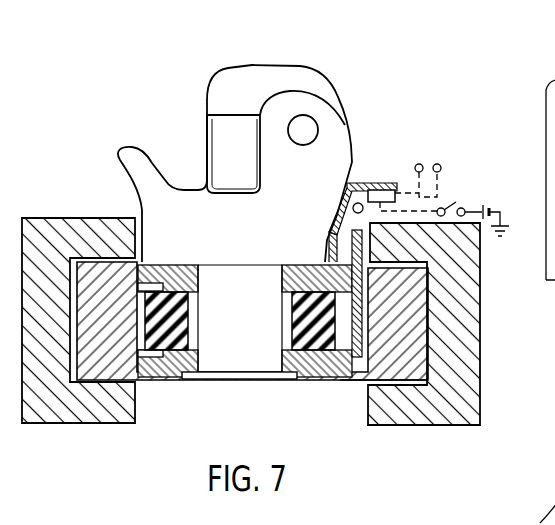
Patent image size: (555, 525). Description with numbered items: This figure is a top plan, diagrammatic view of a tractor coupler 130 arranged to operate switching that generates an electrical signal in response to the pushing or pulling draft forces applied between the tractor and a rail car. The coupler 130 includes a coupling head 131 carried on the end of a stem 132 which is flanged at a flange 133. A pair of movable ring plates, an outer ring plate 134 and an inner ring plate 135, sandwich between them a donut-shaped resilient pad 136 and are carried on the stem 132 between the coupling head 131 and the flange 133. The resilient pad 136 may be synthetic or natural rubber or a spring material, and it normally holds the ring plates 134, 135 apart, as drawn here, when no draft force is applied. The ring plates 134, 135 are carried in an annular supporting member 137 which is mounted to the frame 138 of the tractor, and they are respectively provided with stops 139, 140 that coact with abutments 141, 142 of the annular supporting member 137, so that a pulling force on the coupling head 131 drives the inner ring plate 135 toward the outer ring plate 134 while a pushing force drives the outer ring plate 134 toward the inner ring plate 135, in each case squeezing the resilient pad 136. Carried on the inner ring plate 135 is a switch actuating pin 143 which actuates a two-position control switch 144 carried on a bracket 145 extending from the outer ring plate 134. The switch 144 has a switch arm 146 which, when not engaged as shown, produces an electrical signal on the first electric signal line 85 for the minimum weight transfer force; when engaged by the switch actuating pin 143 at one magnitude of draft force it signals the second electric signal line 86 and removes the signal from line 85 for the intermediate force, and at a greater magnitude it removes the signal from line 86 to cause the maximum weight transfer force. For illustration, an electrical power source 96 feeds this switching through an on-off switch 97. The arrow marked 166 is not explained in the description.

The coupler 130 is at (340, 96).
The coupling head 131 is at (328, 130).
The stem 132 is at (210, 282).
The flange 133 is at (235, 376).
The outer ring plate 134 is at (297, 284).
The inner ring plate 135 is at (307, 380).
The resilient pad 136 is at (160, 384).
The annular supporting member 137 is at (388, 362).
The frame 138 is at (460, 384).
The stop 139 is at (362, 288).
The stop 140 is at (365, 381).
The abutment 141 is at (157, 266).
The abutment 142 is at (143, 383).
The switch actuating pin 143 is at (325, 237).
The two-position control switch 144 is at (378, 190).
The bracket 145 is at (356, 166).
The switch arm 146 is at (359, 202).
The first electric signal line 85 is at (418, 163).
The second electric signal line 86 is at (442, 178).
The on-off switch 97 is at (452, 206).
The electrical power source 96 is at (493, 207).
The direction arrow 166 is at (541, 505).